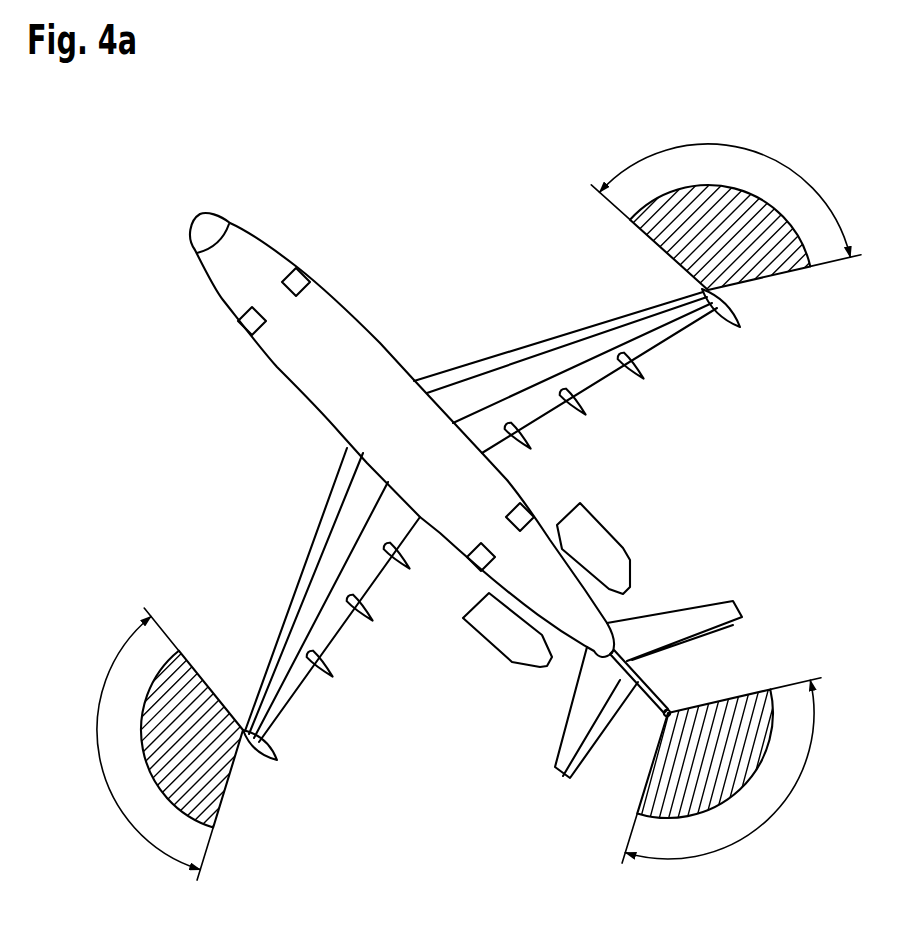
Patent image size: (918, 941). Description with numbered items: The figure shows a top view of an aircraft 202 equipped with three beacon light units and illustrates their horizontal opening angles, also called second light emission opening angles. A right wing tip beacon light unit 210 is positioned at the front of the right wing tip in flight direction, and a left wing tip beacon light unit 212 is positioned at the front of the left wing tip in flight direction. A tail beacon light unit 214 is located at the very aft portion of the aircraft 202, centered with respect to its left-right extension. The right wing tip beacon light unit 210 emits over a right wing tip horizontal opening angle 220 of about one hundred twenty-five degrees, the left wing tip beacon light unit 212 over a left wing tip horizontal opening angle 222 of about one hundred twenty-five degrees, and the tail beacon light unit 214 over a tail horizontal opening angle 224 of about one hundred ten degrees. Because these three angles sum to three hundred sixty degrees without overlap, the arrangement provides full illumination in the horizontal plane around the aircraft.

The aircraft 202 is at (344, 316).
The right wing tip beacon light unit 210 is at (701, 290).
The left wing tip beacon light unit 212 is at (243, 728).
The tail beacon light unit 214 is at (666, 716).
The right wing tip horizontal opening angle 220 is at (743, 149).
The left wing tip horizontal opening angle 222 is at (100, 762).
The tail horizontal opening angle 224 is at (770, 818).